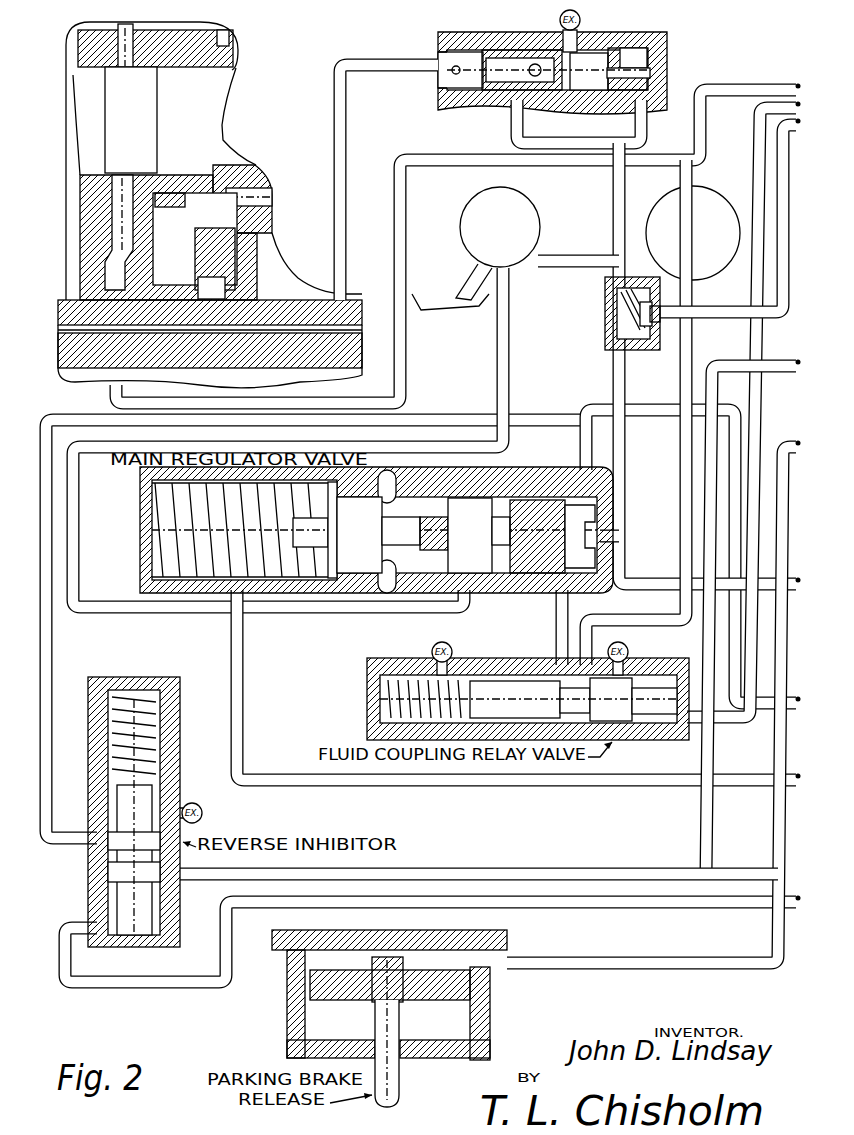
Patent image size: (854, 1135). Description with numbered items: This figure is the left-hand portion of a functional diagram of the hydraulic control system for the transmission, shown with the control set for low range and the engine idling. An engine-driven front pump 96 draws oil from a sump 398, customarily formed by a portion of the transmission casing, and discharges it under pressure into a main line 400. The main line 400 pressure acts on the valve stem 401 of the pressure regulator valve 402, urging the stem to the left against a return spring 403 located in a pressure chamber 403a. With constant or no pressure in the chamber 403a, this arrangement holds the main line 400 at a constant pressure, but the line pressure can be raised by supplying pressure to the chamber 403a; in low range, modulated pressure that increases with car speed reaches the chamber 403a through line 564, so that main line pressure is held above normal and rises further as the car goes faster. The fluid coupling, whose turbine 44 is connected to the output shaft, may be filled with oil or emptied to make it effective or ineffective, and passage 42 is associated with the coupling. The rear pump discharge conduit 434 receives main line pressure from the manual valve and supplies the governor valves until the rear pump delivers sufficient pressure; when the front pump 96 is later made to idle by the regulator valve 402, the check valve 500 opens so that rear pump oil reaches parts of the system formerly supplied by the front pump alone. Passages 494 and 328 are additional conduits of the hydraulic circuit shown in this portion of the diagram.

The front pump 96 is at (487, 198).
The sump 398 is at (470, 312).
The fluid coupling 42 is at (711, 207).
The turbine 44 is at (667, 203).
The main line 400 is at (548, 262).
The valve stem 401 is at (508, 560).
The pressure regulator valve 402 is at (138, 482).
The return spring 403 is at (158, 530).
The pressure chamber 403a is at (162, 557).
The rear pump discharge conduit 434 is at (786, 296).
The fluid passage 494 is at (441, 402).
The check valve 500 is at (657, 352).
The fluid passage 328 is at (684, 497).
The line 564 is at (244, 640).